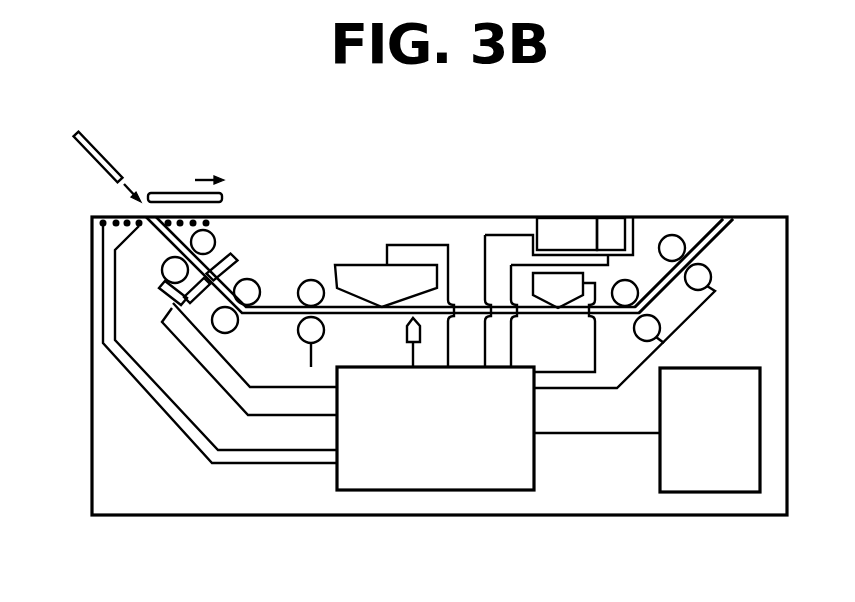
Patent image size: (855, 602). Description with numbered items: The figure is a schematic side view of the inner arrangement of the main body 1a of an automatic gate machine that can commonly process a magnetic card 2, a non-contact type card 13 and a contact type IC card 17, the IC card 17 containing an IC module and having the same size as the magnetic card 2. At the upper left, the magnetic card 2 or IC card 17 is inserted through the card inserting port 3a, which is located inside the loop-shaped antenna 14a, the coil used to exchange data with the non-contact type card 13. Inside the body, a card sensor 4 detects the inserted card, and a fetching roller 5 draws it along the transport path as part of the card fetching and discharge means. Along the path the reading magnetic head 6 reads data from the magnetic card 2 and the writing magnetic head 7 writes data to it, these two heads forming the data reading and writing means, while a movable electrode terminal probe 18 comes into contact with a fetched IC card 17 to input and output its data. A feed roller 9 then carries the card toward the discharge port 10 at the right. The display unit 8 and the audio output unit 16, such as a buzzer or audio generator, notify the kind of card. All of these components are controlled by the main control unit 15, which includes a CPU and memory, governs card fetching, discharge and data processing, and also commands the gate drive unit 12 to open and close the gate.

The main body 1a is at (101, 447).
The magnetic card 2 is at (123, 144).
The IC card 17 is at (103, 154).
The card inserting port 3a is at (142, 200).
The non-contact type card 13 is at (188, 193).
The loop-shaped antenna 14a is at (210, 222).
The fetching roller 5 is at (216, 245).
The card sensor 4 is at (163, 291).
The reading magnetic head 6 is at (361, 262).
The movable electrode terminal probe 18 is at (405, 331).
The writing magnetic head 7 is at (534, 272).
The display unit 8 is at (564, 226).
The audio output unit 16 is at (612, 229).
The feed roller 9 is at (630, 290).
The discharge port 10 is at (729, 218).
The main control unit 15 is at (430, 491).
The gate drive unit 12 is at (703, 492).